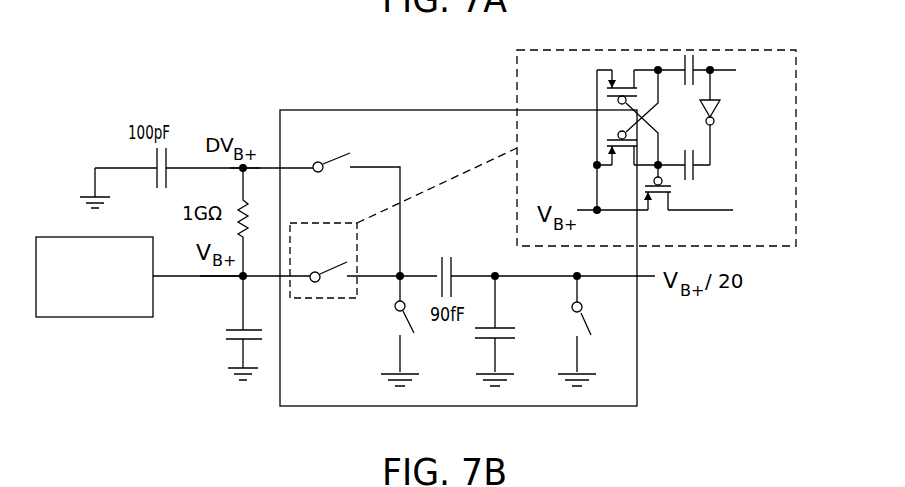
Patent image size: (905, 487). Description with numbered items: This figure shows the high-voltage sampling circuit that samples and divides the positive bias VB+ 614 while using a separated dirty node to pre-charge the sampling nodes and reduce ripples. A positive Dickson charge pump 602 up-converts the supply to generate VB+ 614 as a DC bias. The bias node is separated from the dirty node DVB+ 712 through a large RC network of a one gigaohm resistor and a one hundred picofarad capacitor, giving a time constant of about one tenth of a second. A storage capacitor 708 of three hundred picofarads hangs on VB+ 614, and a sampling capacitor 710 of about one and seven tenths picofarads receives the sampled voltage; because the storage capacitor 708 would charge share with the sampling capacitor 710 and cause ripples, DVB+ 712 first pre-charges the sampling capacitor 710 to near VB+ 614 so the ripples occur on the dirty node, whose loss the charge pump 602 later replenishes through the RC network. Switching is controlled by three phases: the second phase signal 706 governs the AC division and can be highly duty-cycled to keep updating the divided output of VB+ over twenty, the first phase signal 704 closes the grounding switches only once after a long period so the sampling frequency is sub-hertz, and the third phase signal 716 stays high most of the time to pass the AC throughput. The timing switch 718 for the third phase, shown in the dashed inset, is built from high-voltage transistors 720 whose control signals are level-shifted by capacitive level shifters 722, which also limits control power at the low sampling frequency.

The Dickson charge pump 602 is at (76, 317).
The VB+ 614 is at (207, 266).
The Φ1 704 is at (378, 333).
The Φ2 706 is at (316, 122).
The storage capacitor 708 is at (233, 345).
The sampling capacitor 710 is at (487, 325).
The DVB+ 712 is at (234, 130).
The Φ3 716 is at (760, 62).
The timing switch 718 is at (352, 222).
The high-voltage transistor 720 is at (610, 88).
The capacitive level shifter 722 is at (690, 48).